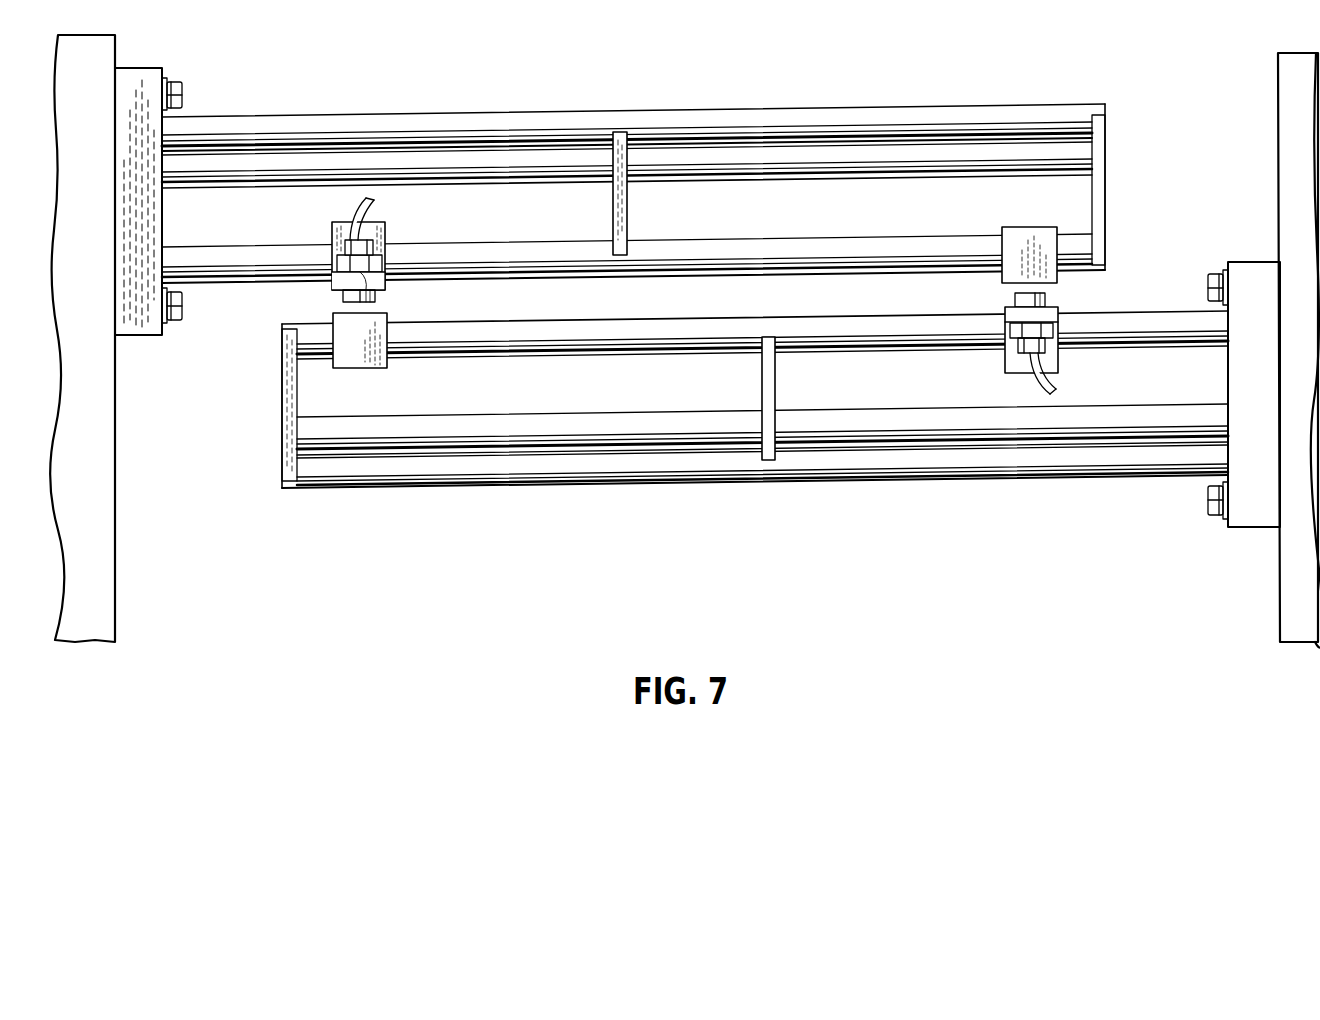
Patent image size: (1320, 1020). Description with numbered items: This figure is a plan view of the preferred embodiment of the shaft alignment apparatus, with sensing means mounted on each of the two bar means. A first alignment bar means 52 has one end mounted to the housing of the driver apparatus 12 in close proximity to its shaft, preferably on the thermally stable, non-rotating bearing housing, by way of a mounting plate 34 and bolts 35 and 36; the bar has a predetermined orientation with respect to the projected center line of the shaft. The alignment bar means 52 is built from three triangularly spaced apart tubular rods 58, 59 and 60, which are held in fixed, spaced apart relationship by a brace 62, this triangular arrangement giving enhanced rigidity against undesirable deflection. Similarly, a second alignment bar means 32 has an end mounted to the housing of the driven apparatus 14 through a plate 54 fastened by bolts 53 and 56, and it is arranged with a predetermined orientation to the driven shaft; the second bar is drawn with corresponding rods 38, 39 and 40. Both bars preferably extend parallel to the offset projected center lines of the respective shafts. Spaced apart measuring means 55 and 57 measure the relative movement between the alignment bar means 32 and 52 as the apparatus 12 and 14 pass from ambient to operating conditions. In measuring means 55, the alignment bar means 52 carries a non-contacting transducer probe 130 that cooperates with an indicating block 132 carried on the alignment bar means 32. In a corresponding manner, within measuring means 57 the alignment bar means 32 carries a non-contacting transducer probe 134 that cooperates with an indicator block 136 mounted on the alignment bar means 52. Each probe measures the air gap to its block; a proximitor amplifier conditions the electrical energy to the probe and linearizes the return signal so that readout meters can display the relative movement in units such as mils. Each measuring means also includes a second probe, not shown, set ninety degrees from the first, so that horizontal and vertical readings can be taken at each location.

The driver apparatus 12 is at (103, 557).
The driven apparatus 14 is at (1286, 585).
The second alignment bar means 32 is at (755, 424).
The left mounting plate 34 is at (142, 335).
The bolt 35 is at (178, 87).
The bolt 36 is at (182, 325).
The upper rail of lower beam 38 is at (601, 352).
The intermediate web of lower beam 39 is at (666, 419).
The lower rail of lower beam 40 is at (598, 479).
The first alignment bar means 52 is at (633, 182).
The upper right bolt 53 is at (1208, 287).
The right mounting plate 54 is at (1262, 530).
The measuring means 55 is at (388, 253).
The lower right bolt 56 is at (1208, 507).
The measuring means 57 is at (1024, 343).
The tubular rod 58 is at (366, 122).
The tubular rod 59 is at (276, 190).
The tubular rod 60 is at (266, 284).
The brace 62 is at (630, 218).
The non-contacting transducer probe 130 is at (385, 290).
The indicating block 132 is at (386, 368).
The non-contacting transducer probe 134 is at (1046, 352).
The indicator block 136 is at (1010, 272).